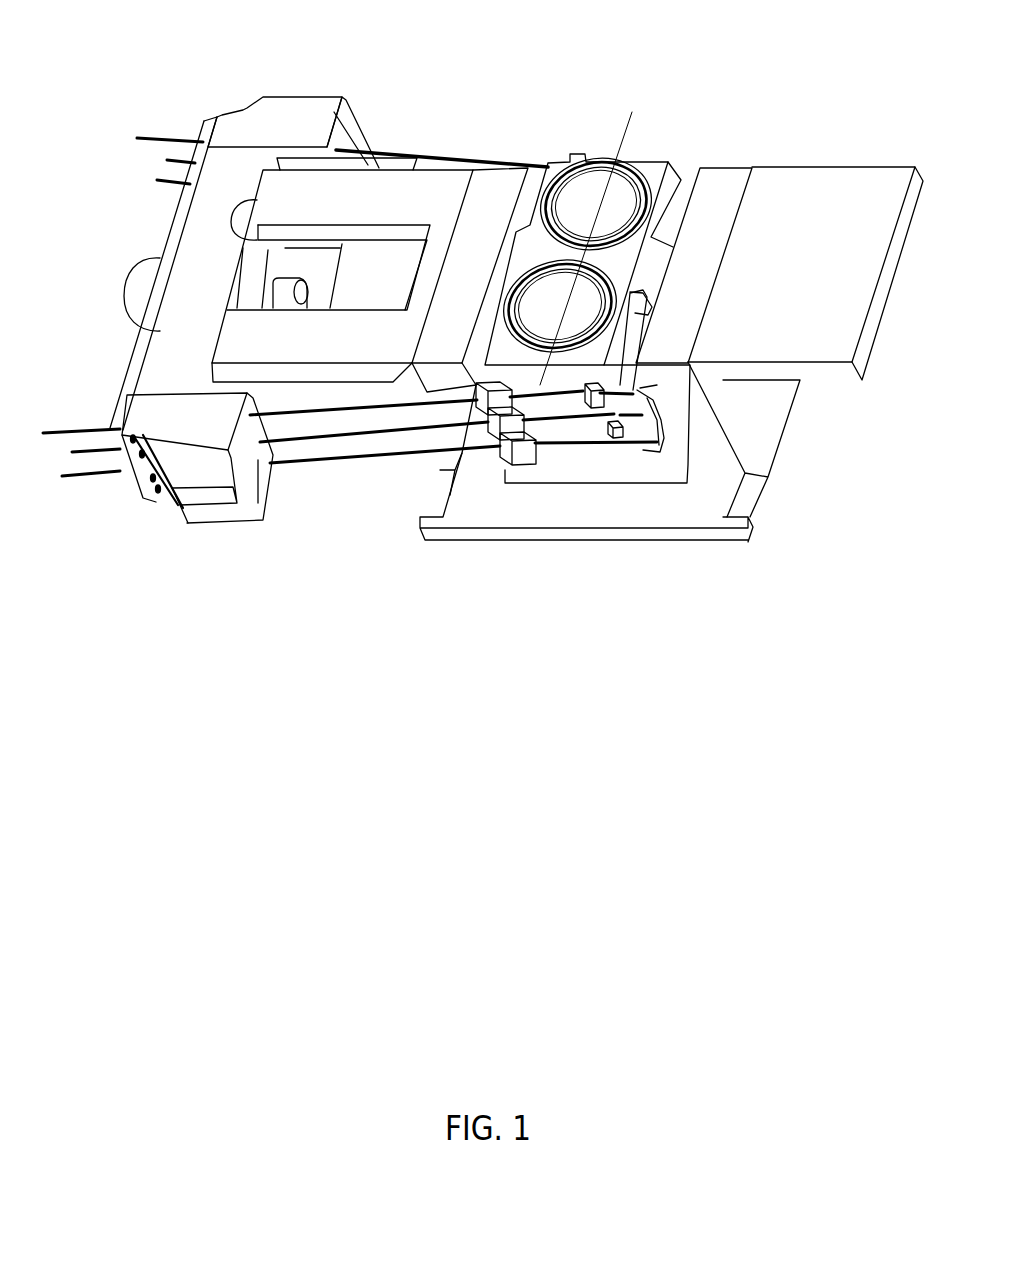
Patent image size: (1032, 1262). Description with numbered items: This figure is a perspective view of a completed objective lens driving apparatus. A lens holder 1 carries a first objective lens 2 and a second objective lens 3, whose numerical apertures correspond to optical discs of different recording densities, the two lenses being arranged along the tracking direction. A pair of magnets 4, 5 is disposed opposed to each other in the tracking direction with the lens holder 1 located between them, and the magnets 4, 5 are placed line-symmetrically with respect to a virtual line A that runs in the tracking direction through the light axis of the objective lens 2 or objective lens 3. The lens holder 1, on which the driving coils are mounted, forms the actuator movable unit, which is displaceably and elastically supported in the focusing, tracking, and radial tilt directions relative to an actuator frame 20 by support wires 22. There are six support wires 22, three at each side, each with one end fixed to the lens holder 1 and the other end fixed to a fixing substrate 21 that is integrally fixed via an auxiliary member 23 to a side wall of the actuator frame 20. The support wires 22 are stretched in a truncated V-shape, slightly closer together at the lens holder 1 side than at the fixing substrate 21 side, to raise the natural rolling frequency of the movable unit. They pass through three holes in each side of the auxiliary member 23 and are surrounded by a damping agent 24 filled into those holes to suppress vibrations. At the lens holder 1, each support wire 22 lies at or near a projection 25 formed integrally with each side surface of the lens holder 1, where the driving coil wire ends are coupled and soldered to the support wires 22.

The lens holder 1 is at (652, 168).
The first objective lens 2 is at (578, 193).
The second objective lens 3 is at (586, 303).
The magnet 4 is at (487, 205).
The magnet 5 is at (712, 193).
The actuator frame 20 is at (418, 197).
The fixing substrate 21 is at (177, 220).
The support wires 22 is at (403, 150).
The auxiliary member 23 is at (270, 118).
The damping agent 24 is at (347, 140).
The projection 25 is at (641, 400).
The virtual line A is at (590, 232).